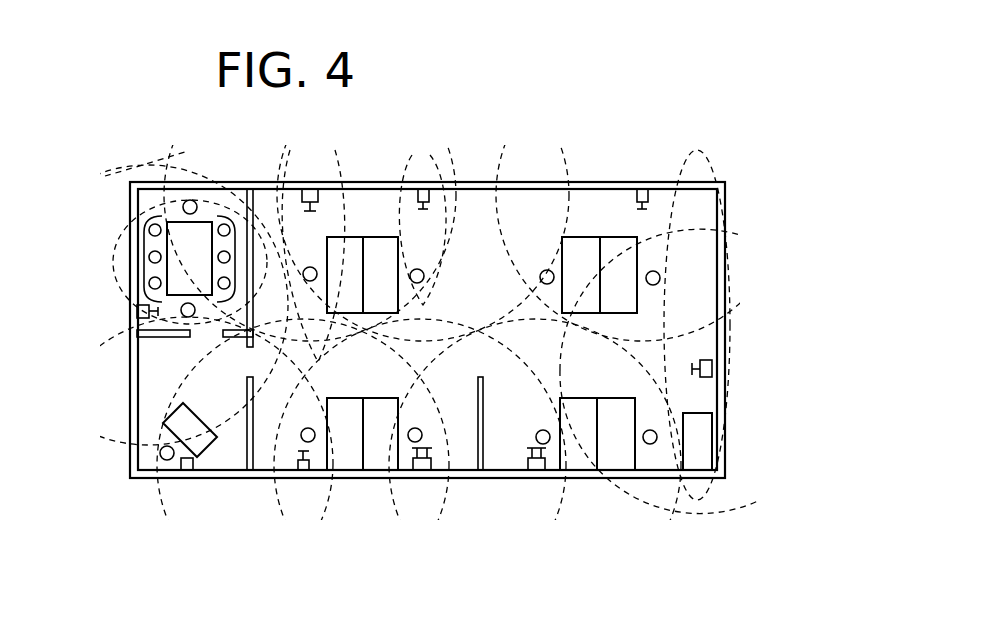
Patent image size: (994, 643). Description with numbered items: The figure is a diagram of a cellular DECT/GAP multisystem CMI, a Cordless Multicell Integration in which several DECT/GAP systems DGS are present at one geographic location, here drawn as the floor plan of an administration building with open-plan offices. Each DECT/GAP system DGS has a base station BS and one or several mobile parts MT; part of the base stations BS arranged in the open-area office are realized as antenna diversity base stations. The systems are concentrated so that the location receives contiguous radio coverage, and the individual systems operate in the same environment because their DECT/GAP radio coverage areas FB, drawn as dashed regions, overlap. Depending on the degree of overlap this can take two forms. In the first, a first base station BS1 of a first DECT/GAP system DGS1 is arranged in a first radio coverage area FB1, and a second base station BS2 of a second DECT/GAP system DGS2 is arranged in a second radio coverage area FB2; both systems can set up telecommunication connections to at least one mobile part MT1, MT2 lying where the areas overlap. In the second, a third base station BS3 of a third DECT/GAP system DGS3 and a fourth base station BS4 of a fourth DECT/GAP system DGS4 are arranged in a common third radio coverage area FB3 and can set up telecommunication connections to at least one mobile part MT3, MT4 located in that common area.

The cellular DECT/GAP multisystem CMI is at (468, 176).
The mobile part MT is at (453, 332).
The mobile part MT1 is at (745, 316).
The mobile part MT2 is at (658, 283).
The mobile part MT3 is at (466, 398).
The mobile part MT4 is at (419, 430).
The base station BS is at (481, 341).
The first base station BS1 is at (641, 188).
The second base station BS2 is at (713, 376).
The third base station BS3 is at (535, 472).
The fourth base station BS4 is at (416, 472).
The radio coverage area FB is at (185, 150).
The first radio coverage area FB1 is at (742, 300).
The second radio coverage area FB2 is at (738, 506).
The third radio coverage area FB3 is at (657, 515).
The DECT/GAP system DGS is at (112, 288).
The first DECT/GAP system DGS1 is at (521, 175).
The second DECT/GAP system DGS2 is at (686, 210).
The third DECT/GAP system DGS3 is at (669, 513).
The fourth DECT/GAP system DGS4 is at (558, 496).